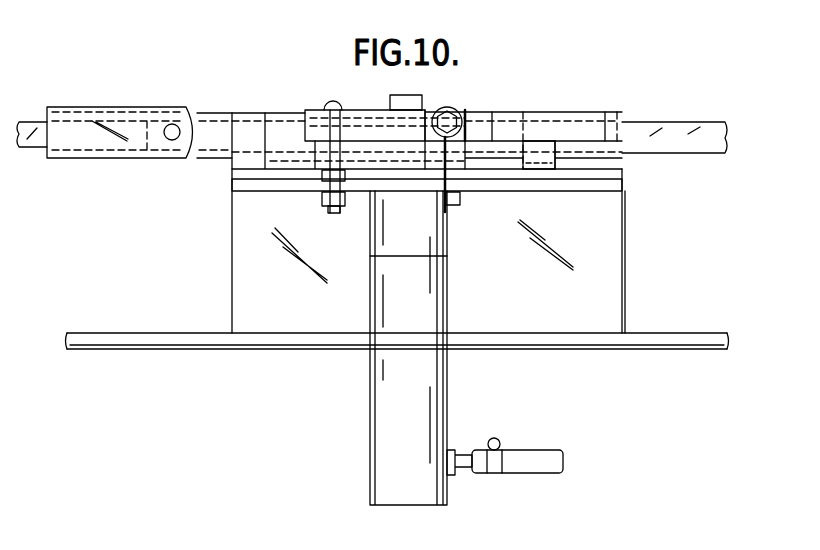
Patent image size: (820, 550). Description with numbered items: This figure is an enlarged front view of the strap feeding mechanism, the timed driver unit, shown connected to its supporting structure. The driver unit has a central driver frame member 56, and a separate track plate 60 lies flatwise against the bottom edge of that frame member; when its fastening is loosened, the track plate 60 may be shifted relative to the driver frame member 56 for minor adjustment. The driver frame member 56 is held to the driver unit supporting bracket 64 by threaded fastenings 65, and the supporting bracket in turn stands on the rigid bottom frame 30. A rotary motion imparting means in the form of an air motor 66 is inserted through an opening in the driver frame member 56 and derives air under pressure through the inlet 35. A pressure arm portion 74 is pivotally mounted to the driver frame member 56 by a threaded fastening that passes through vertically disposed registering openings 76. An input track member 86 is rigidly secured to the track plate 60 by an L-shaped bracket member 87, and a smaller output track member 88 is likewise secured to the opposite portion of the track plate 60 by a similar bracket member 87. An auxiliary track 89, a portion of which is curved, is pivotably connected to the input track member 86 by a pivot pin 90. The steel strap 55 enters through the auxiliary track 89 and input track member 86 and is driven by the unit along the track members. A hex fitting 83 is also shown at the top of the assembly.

The bottom frame 30 is at (688, 333).
The inlet air supply tube 35 is at (538, 450).
The steel strap 55 is at (37, 148).
The driver frame member 56 is at (400, 164).
The track plate 60 is at (516, 183).
The driver unit supporting bracket 64 is at (613, 243).
The threaded fastenings 65 is at (335, 212).
The air motor 66 is at (430, 381).
The pressure arm portion 74 is at (583, 123).
The registering openings 76 is at (340, 158).
The hex nut 83 is at (462, 111).
The input track member 86 is at (213, 122).
The L-shaped bracket member 87 is at (247, 157).
The output track member 88 is at (539, 113).
The auxiliary track 89 is at (102, 104).
The pivot pin 90 is at (172, 140).